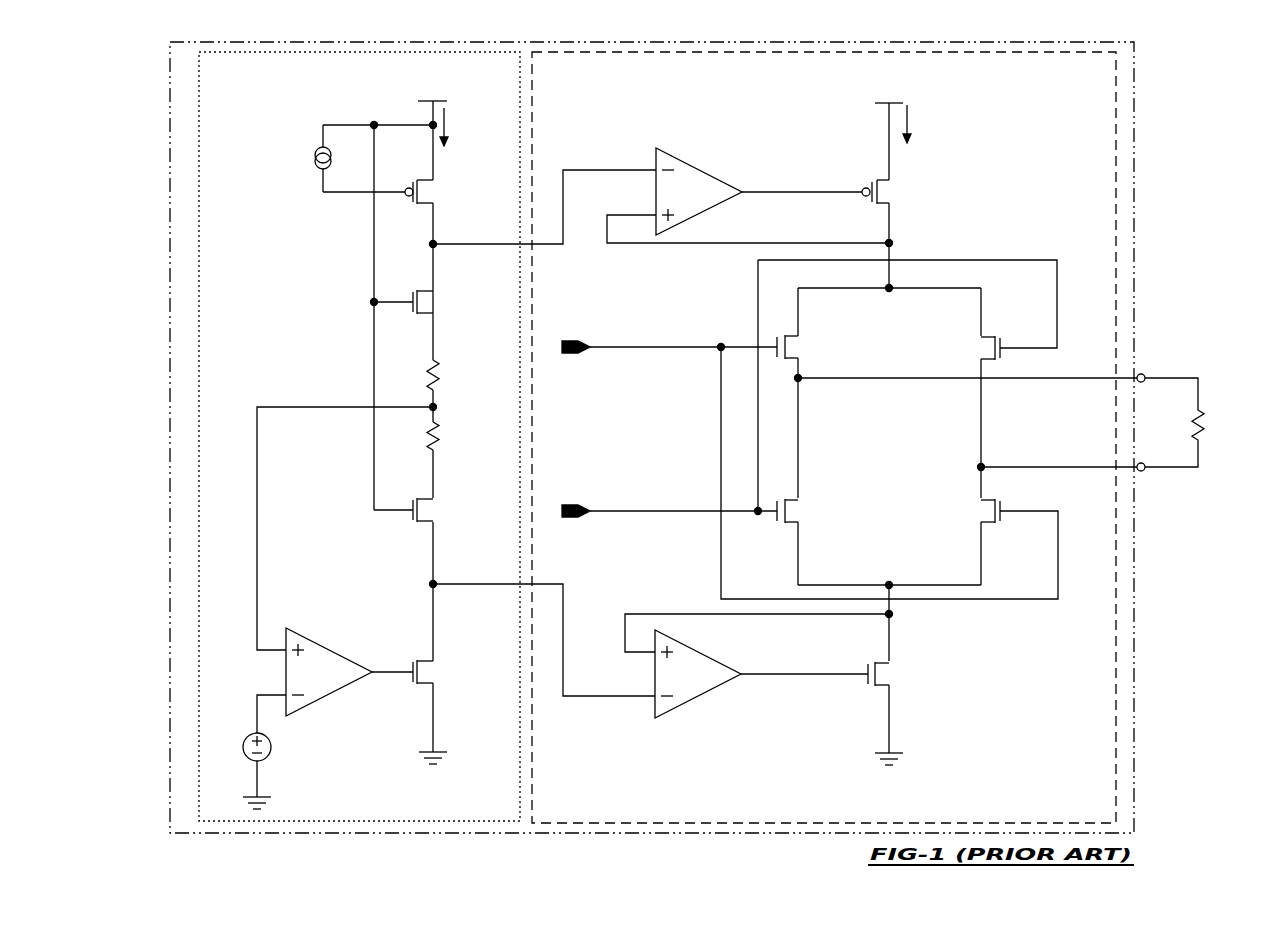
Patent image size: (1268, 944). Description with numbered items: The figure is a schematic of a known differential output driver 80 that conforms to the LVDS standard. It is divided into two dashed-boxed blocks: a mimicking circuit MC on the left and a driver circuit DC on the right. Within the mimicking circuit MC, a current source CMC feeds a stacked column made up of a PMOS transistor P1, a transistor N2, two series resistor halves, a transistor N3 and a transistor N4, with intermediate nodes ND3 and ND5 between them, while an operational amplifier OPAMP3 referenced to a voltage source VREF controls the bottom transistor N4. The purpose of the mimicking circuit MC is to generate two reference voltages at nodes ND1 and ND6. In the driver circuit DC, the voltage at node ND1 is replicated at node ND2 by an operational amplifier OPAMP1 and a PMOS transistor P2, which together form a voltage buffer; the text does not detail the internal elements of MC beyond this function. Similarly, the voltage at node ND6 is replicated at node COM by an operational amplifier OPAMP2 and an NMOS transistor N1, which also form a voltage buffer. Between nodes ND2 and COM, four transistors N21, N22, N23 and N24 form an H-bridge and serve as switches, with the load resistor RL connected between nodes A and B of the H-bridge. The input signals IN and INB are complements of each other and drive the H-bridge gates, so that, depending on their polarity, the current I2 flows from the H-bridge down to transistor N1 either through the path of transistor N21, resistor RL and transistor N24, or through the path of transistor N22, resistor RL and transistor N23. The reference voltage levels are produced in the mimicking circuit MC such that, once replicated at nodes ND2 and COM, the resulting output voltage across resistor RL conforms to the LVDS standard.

The mimicking circuit MC is at (199, 230).
The driver circuit DC is at (1116, 734).
The differential output driver 80 is at (505, 834).
The current mirror current source CMC is at (313, 157).
The PMOS transistor P1 is at (432, 192).
The node ND1 is at (458, 243).
The NMOS transistor N2 is at (432, 302).
The node ND3 is at (433, 345).
The node ND5 is at (433, 475).
The NMOS transistor N3 is at (432, 510).
The node ND6 is at (458, 584).
The NMOS transistor N4 is at (432, 672).
The operational amplifier OPAMP3 is at (313, 708).
The reference voltage source VREF is at (243, 748).
The PMOS transistor P2 is at (890, 190).
The current I2 is at (920, 124).
The operational amplifier OPAMP1 is at (676, 158).
The node ND2 is at (889, 292).
The input signal IN is at (669, 337).
The input signal INB is at (669, 501).
The transistor N21 is at (797, 338).
The transistor N22 is at (975, 338).
The transistor N23 is at (802, 520).
The transistor N24 is at (976, 520).
The node COM is at (892, 582).
The NMOS transistor N1 is at (888, 667).
The operational amplifier OPAMP2 is at (676, 708).
The node A is at (1144, 373).
The node B is at (1144, 472).
The load resistor RL is at (1211, 418).